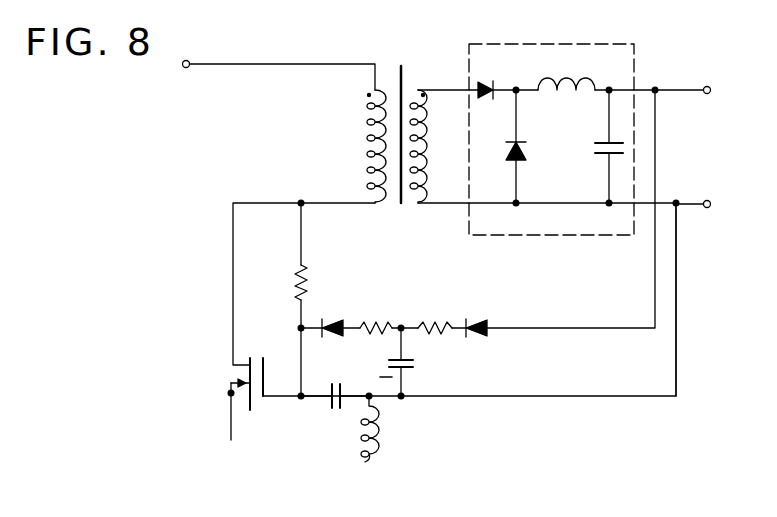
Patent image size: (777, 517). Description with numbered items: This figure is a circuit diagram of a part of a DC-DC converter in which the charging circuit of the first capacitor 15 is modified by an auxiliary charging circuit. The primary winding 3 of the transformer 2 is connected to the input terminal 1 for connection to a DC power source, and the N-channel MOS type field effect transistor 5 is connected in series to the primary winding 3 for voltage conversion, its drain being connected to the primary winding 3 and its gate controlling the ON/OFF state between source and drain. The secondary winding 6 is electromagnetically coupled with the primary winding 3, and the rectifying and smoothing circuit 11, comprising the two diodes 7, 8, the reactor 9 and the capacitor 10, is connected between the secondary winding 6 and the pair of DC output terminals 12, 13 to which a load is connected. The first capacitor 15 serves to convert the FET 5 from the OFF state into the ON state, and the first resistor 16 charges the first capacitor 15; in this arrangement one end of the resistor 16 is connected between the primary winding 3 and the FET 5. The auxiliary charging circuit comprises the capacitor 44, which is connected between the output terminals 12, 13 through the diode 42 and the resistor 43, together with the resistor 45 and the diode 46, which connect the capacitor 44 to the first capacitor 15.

The input terminal 1 is at (186, 60).
The transformer 2 is at (405, 78).
The primary winding 3 is at (370, 120).
The N-channel MOS type field effect transistor 5 is at (232, 370).
The secondary winding 6 is at (428, 123).
The diode 7 is at (498, 82).
The diode 8 is at (518, 160).
The reactor 9 is at (575, 93).
The capacitor 10 is at (604, 156).
The rectifying and smoothing circuit 11 is at (633, 76).
The DC output terminal 12 is at (707, 86).
The DC output terminal 13 is at (707, 200).
The first capacitor 15 is at (340, 386).
The first resistor 16 is at (297, 290).
The diode 42 is at (480, 319).
The resistor 43 is at (433, 320).
The capacitor 44 is at (413, 360).
The resistor 45 is at (380, 320).
The diode 46 is at (333, 320).